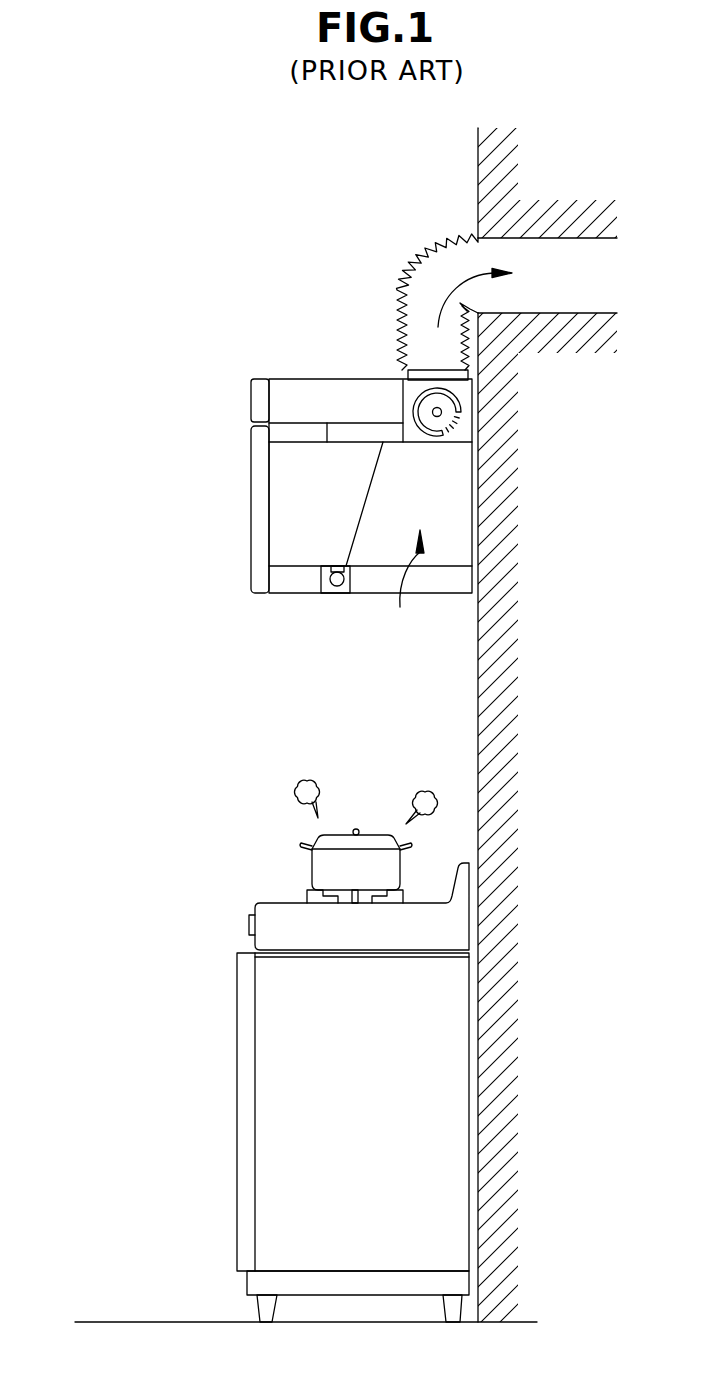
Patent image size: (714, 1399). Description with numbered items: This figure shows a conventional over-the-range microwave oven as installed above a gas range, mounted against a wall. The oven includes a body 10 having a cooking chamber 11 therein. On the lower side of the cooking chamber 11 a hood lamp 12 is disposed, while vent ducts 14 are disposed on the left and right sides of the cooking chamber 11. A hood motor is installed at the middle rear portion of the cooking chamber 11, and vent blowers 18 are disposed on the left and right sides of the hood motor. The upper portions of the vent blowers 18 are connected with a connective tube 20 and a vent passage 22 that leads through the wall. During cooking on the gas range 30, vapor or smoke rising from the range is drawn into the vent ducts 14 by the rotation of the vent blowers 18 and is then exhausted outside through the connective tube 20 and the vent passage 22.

The body 10 is at (185, 396).
The cooking chamber 11 is at (278, 481).
The hood lamp 12 is at (336, 593).
The vent ducts 14 is at (458, 519).
The vent blowers 18 is at (459, 407).
The connective tube 20 is at (404, 290).
The vent passage 22 is at (545, 253).
The gas range 30 is at (469, 918).